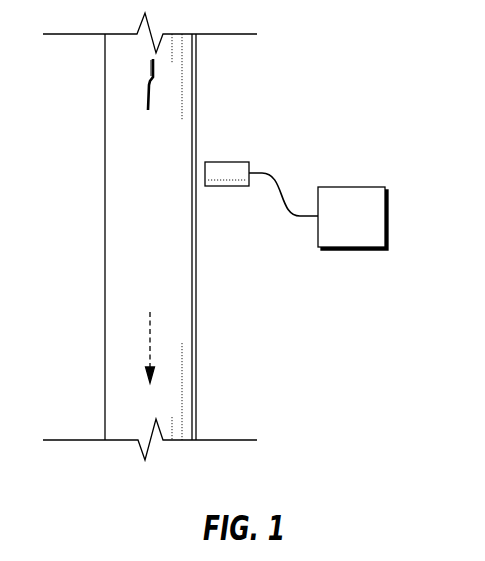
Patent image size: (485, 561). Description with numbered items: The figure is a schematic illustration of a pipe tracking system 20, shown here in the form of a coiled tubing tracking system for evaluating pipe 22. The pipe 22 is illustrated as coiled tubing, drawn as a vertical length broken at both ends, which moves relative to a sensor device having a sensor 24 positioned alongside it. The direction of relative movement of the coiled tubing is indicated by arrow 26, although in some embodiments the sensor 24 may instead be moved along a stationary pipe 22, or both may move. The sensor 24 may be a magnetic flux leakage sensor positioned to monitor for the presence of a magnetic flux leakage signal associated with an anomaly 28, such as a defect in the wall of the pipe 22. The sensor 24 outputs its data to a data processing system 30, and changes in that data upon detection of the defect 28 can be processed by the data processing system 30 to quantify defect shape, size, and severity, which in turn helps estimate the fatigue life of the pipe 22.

The pipe tracking system 20 is at (364, 139).
The pipe 22 is at (157, 248).
The sensor 24 is at (234, 168).
The arrow 26 is at (147, 343).
The anomaly 28 is at (138, 90).
The data processing system 30 is at (365, 228).